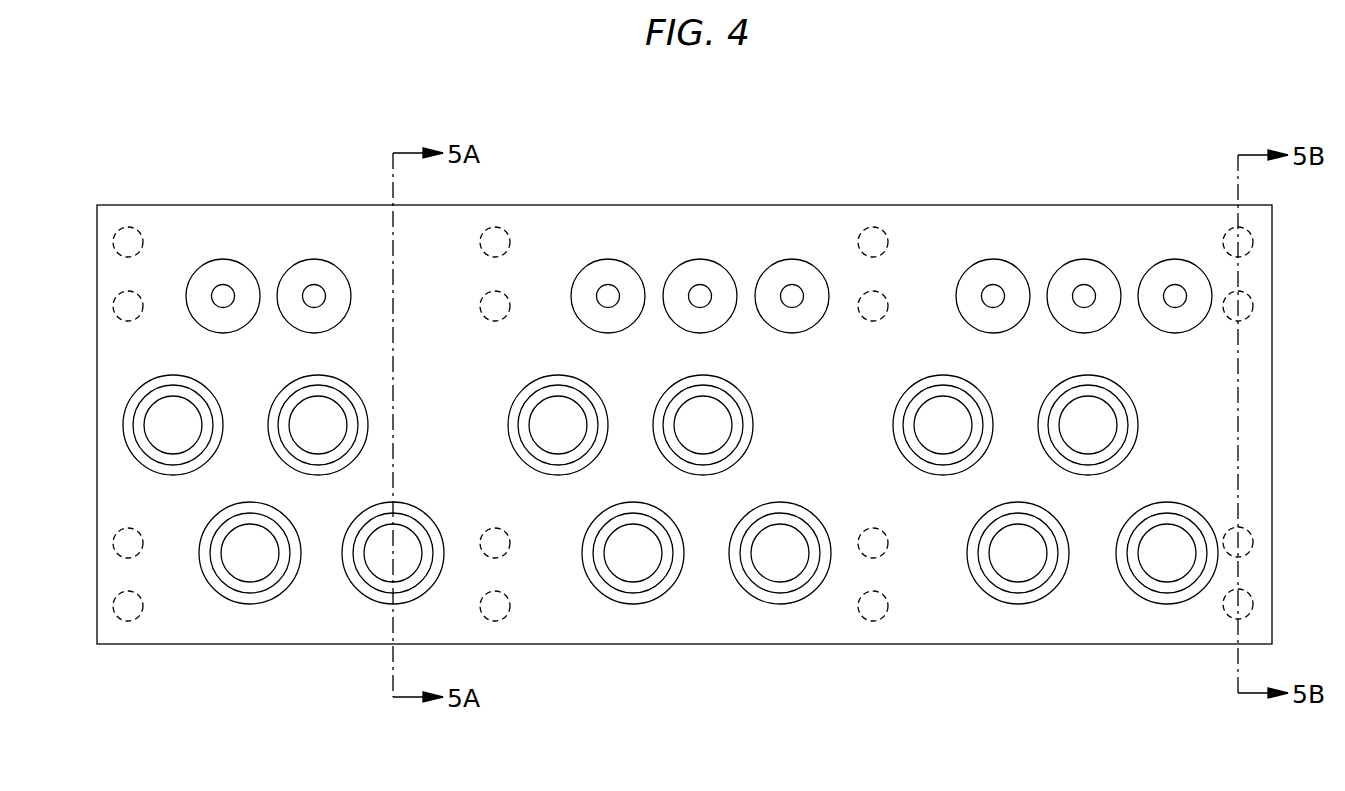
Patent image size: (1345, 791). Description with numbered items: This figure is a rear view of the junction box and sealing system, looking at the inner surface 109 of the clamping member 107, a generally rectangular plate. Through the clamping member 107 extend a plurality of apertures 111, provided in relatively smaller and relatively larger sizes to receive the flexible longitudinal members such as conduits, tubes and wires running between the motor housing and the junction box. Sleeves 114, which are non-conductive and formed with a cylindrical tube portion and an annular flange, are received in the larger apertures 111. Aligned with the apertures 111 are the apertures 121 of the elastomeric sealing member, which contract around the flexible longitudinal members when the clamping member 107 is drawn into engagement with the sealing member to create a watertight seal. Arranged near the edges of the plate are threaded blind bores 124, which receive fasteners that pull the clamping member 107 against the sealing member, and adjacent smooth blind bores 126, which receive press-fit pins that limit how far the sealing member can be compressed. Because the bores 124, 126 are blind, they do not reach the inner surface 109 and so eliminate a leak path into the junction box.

The clamping member 107 is at (662, 222).
The inner surface 109 is at (852, 436).
The apertures 111 is at (706, 285).
The sleeves 114 is at (647, 598).
The apertures 121 is at (701, 289).
The bores 124 is at (871, 227).
The blind bores 126 is at (886, 303).